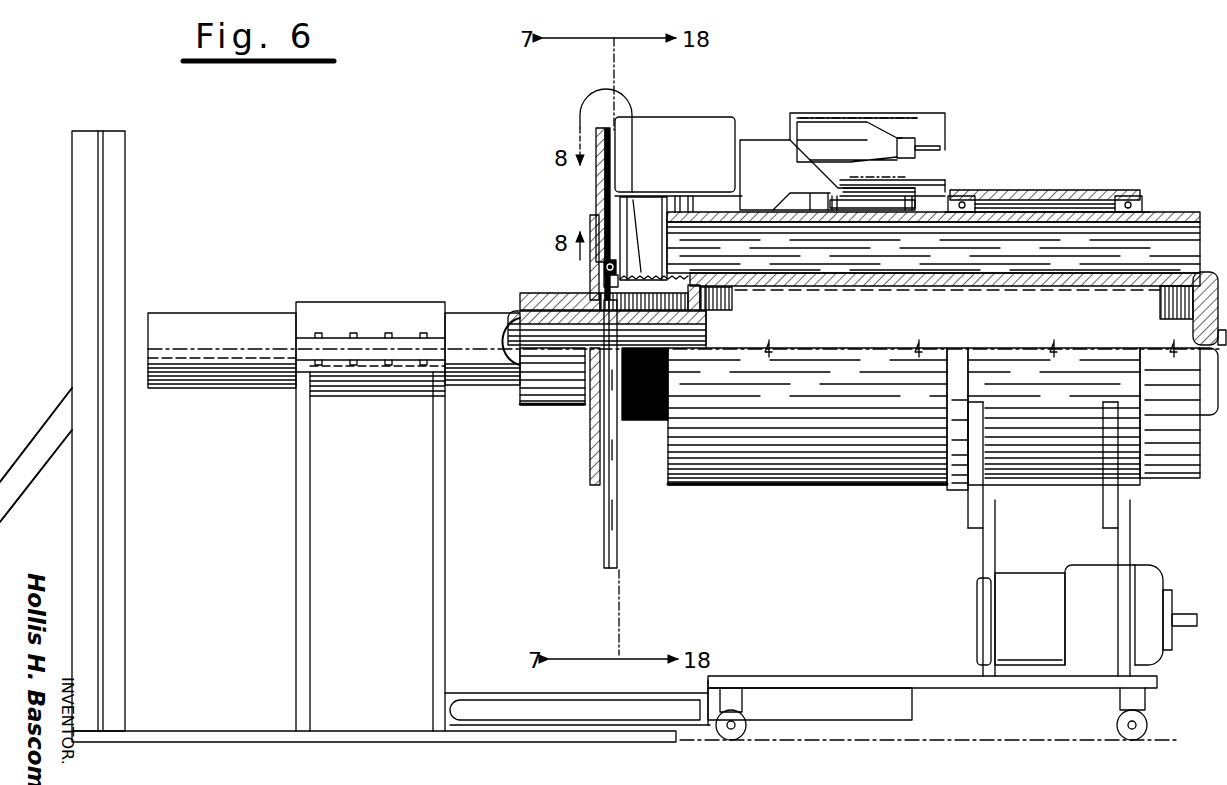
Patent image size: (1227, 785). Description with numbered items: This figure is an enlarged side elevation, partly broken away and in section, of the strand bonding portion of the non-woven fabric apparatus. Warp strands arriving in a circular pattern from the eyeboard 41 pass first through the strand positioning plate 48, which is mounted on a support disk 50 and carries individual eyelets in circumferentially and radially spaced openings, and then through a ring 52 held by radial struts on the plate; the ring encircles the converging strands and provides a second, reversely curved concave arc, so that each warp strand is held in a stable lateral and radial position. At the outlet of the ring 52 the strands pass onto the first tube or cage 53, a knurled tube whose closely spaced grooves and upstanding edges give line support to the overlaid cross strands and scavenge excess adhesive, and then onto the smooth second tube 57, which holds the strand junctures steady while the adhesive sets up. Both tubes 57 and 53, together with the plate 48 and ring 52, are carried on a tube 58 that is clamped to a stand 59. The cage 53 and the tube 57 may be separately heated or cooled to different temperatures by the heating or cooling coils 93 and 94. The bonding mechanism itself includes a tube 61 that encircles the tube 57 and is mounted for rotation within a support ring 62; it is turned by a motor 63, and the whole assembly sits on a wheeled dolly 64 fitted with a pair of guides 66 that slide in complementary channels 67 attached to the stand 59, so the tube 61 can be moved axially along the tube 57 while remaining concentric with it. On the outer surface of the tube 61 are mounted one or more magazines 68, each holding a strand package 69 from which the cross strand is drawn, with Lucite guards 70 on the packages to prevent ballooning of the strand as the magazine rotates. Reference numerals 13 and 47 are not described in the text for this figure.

The winding apparatus 13 is at (967, 60).
The eyeboard 41 is at (100, 131).
The collar 47 is at (552, 374).
The strand positioning plate 48 is at (597, 181).
The support disk 50 is at (592, 441).
The ring 52 is at (591, 275).
The tube or cage 53 is at (660, 272).
The second tube 57 is at (834, 286).
The tube 58 is at (217, 322).
The stand 59 is at (446, 540).
The tube 61 is at (918, 214).
The support ring 62 is at (1037, 192).
The motor 63 is at (1153, 578).
The wheeled dolly 64 is at (977, 686).
The guides 66 is at (832, 708).
The channels 67 is at (508, 723).
The magazine 68 is at (752, 124).
The strand package 69 is at (867, 112).
The Lucite guards 70 is at (912, 110).
The heating or cooling coil 93 is at (703, 330).
The heating or cooling coil 94 is at (729, 298).